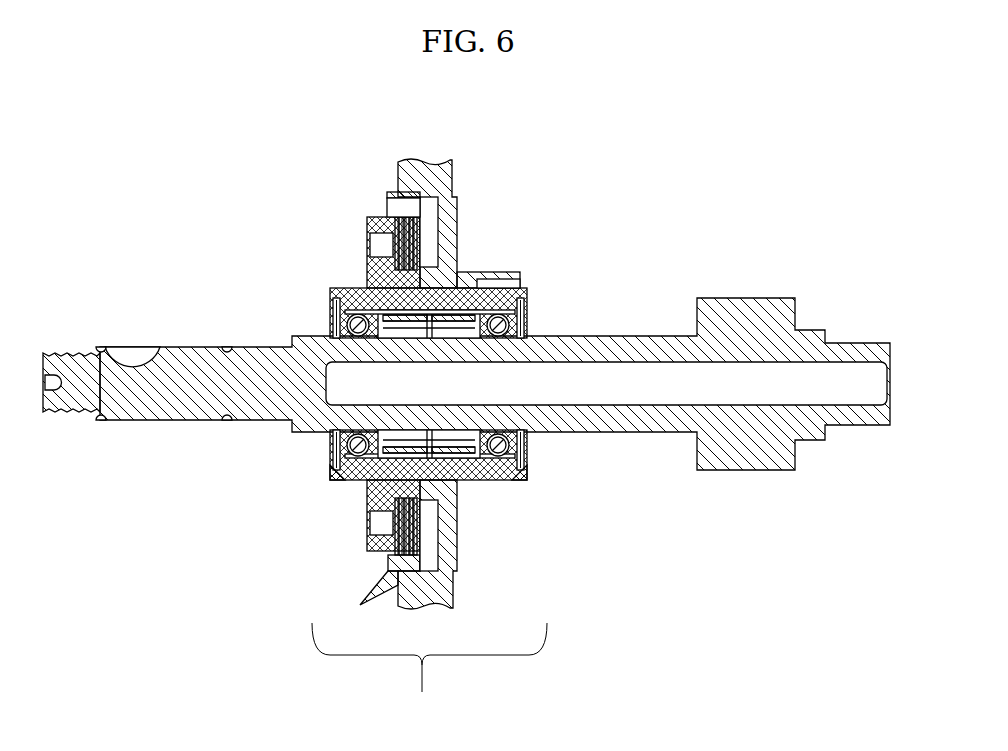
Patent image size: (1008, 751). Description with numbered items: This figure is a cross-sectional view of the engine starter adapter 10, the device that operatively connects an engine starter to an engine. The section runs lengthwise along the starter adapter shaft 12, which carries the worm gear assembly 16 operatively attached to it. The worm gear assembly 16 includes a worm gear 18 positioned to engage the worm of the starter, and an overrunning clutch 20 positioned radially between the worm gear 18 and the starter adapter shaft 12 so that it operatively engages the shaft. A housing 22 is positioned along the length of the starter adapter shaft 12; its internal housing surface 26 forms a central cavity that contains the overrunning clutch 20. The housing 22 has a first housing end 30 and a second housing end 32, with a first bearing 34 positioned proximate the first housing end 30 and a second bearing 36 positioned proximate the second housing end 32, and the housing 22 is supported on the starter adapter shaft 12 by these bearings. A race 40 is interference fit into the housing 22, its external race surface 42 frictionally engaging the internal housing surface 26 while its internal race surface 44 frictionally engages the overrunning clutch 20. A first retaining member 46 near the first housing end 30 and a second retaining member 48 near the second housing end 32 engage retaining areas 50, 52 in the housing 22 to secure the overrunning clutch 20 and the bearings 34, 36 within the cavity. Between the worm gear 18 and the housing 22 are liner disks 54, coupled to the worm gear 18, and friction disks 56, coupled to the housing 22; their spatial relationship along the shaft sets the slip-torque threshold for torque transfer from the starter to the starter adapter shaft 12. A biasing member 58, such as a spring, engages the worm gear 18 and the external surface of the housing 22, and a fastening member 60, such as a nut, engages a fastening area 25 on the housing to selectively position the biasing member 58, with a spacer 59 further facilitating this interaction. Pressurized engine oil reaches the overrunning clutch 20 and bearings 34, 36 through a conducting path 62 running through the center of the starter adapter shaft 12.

The engine starter adapter 10 is at (128, 207).
The starter adapter shaft 12 is at (582, 337).
The worm gear assembly 16 is at (429, 672).
The worm gear 18 is at (392, 183).
The overrunning clutch 20 is at (330, 467).
The housing 22 is at (367, 517).
The fastening area 25 is at (495, 288).
The internal housing surface 26 is at (419, 451).
The first housing end 30 is at (324, 488).
The second housing end 32 is at (535, 483).
The first bearing 34 is at (345, 293).
The second bearing 36 is at (523, 283).
The race 40 is at (370, 490).
The external race surface 42 is at (432, 446).
The internal race surface 44 is at (437, 450).
The first retaining member 46 is at (336, 307).
The second retaining member 48 is at (528, 300).
The retaining area 50 is at (335, 443).
The retaining area 52 is at (523, 445).
The liner disk 54 is at (391, 211).
The friction disk 56 is at (404, 217).
The biasing member 58 is at (453, 248).
The spacer 59 is at (468, 272).
The fastening member 60 is at (488, 272).
The conducting path 62 is at (650, 375).